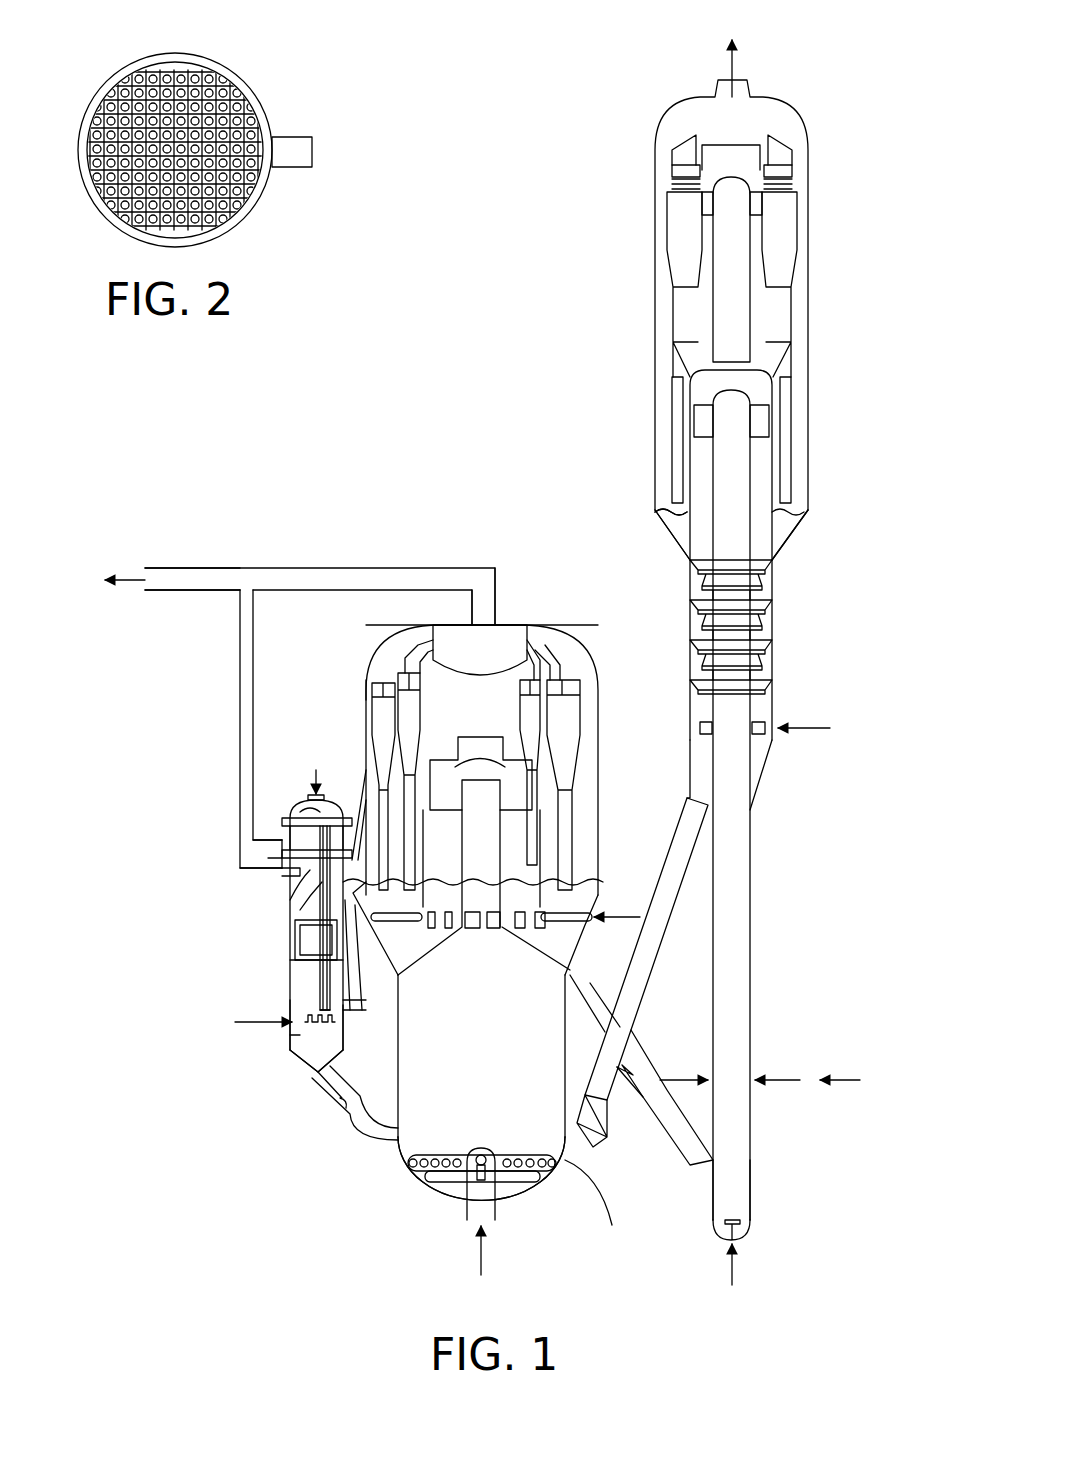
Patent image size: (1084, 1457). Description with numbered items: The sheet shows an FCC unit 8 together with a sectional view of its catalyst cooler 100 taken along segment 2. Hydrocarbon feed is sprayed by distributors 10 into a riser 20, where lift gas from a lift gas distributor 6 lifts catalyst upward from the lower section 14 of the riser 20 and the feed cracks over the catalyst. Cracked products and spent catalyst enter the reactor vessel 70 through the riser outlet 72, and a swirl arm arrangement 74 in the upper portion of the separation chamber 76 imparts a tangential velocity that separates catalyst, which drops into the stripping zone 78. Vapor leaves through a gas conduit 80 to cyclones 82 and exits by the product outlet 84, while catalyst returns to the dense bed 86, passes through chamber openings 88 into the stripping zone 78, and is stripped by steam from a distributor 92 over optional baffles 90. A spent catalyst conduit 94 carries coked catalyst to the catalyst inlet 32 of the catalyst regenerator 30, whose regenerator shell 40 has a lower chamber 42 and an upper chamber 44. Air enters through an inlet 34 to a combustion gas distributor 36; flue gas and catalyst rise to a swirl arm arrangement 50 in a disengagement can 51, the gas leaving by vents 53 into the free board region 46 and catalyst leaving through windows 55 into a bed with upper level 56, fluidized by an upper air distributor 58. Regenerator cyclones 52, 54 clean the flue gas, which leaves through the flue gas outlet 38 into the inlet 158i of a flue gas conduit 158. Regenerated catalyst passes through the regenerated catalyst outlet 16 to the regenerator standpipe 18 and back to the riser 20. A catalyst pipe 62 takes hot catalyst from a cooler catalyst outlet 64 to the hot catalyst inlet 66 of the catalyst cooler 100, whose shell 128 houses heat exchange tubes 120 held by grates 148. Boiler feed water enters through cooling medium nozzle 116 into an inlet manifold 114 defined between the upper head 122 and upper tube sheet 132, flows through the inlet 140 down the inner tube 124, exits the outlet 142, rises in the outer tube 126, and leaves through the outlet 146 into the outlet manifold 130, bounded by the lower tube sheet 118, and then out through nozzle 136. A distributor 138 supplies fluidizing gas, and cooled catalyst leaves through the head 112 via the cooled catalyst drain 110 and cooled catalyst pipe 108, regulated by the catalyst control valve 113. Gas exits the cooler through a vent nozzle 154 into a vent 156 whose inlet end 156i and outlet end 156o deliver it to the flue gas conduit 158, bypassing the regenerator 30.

In FIG. 1, the section segment 2 is at (178, 955).
In FIG. 1, the lift gas distributor 6 is at (752, 1222).
In FIG. 1, the FCC unit 8 is at (487, 400).
In FIG. 1, the distributors 10 is at (865, 1080).
In FIG. 1, the lower section of the riser 14 is at (752, 1125).
In FIG. 1, the regenerated catalyst outlet 16 is at (572, 985).
In FIG. 1, the regenerator standpipe 18 is at (632, 1092).
In FIG. 1, the riser 20 is at (752, 918).
In FIG. 1, the catalyst regenerator 30 is at (425, 528).
In FIG. 1, the catalyst inlet 32 is at (565, 1170).
In FIG. 1, the inlet 34 is at (497, 1202).
In FIG. 1, the combustion gas distributor 36 is at (418, 1172).
In FIG. 1, the flue gas outlet 38 is at (495, 616).
In FIG. 1, the regenerator shell 40 is at (366, 660).
In FIG. 1, the lower chamber 42 is at (591, 1210).
In FIG. 1, the upper chamber 44 is at (598, 740).
In FIG. 1, the free board region 46 is at (580, 668).
In FIG. 1, the swirl arm arrangement 50 is at (535, 770).
In FIG. 1, the disengagement can 51 is at (452, 760).
In FIG. 1, the regenerator cyclone 52 is at (570, 700).
In FIG. 1, the vents 53 is at (505, 755).
In FIG. 1, the regenerator cyclone 54 is at (565, 645).
In FIG. 1, the windows 55 is at (480, 928).
In FIG. 1, the upper level of the dense catalyst bed 56 is at (575, 890).
In FIG. 1, the upper air distributor 58 is at (565, 925).
In FIG. 1, the catalyst pipe 62 is at (353, 982).
In FIG. 1, the cooler catalyst outlet 64 is at (353, 850).
In FIG. 1, the hot catalyst inlet 66 is at (363, 1013).
In FIG. 1, the reactor vessel 70 is at (808, 272).
In FIG. 1, the riser outlet 72 is at (765, 420).
In FIG. 1, the swirl arm arrangement 74 is at (700, 422).
In FIG. 1, the separation chamber 76 is at (765, 460).
In FIG. 1, the stripping zone 78 is at (774, 582).
In FIG. 1, the gas conduit 80 is at (740, 316).
In FIG. 1, the cyclones 82 is at (675, 222).
In FIG. 1, the product outlet 84 is at (740, 78).
In FIG. 1, the dense bed 86 is at (655, 524).
In FIG. 1, the chamber openings 88 is at (683, 548).
In FIG. 1, the baffles 90 is at (773, 644).
In FIG. 1, the distributor 92 is at (770, 730).
In FIG. 1, the spent catalyst conduit 94 is at (670, 836).
In FIG. 2, the catalyst cooler 100 is at (72, 80).
In FIG. 1, the catalyst cooler 100 is at (162, 712).
In FIG. 2, the cooled catalyst pipe 108 is at (292, 170).
In FIG. 1, the cooled catalyst pipe 108 is at (352, 1135).
In FIG. 1, the cooled catalyst drain 110 is at (290, 1068).
In FIG. 1, the head 112 is at (300, 1060).
In FIG. 1, the catalyst control valve 113 is at (342, 1105).
In FIG. 1, the inlet manifold 114 is at (290, 805).
In FIG. 1, the cooling medium nozzle 116 is at (308, 796).
In FIG. 1, the lower tube sheet 118 is at (292, 890).
In FIG. 2, the catalyst cooler tube 120 is at (236, 98).
In FIG. 1, the catalyst cooler tube 120 is at (320, 985).
In FIG. 1, the upper head 122 is at (302, 808).
In FIG. 1, the inner tube 124 is at (320, 980).
In FIG. 1, the outer tube 126 is at (300, 950).
In FIG. 1, the shell 128 is at (290, 1035).
In FIG. 1, the outlet manifold 130 is at (282, 866).
In FIG. 1, the upper tube sheet 132 is at (292, 822).
In FIG. 1, the nozzle 136 is at (290, 836).
In FIG. 1, the distributor 138 is at (238, 1020).
In FIG. 1, the inlet 140 is at (318, 775).
In FIG. 1, the outlet 142 is at (343, 1015).
In FIG. 1, the outlet 146 is at (302, 905).
In FIG. 2, the grates 148 is at (92, 170).
In FIG. 1, the grates 148 is at (295, 936).
In FIG. 1, the vent nozzle 154 is at (282, 873).
In FIG. 1, the vent 156 is at (240, 732).
In FIG. 1, the inlet end 156i is at (240, 855).
In FIG. 1, the outlet end 156o is at (243, 568).
In FIG. 1, the flue gas conduit 158 is at (455, 568).
In FIG. 1, the inlet 158i is at (485, 615).